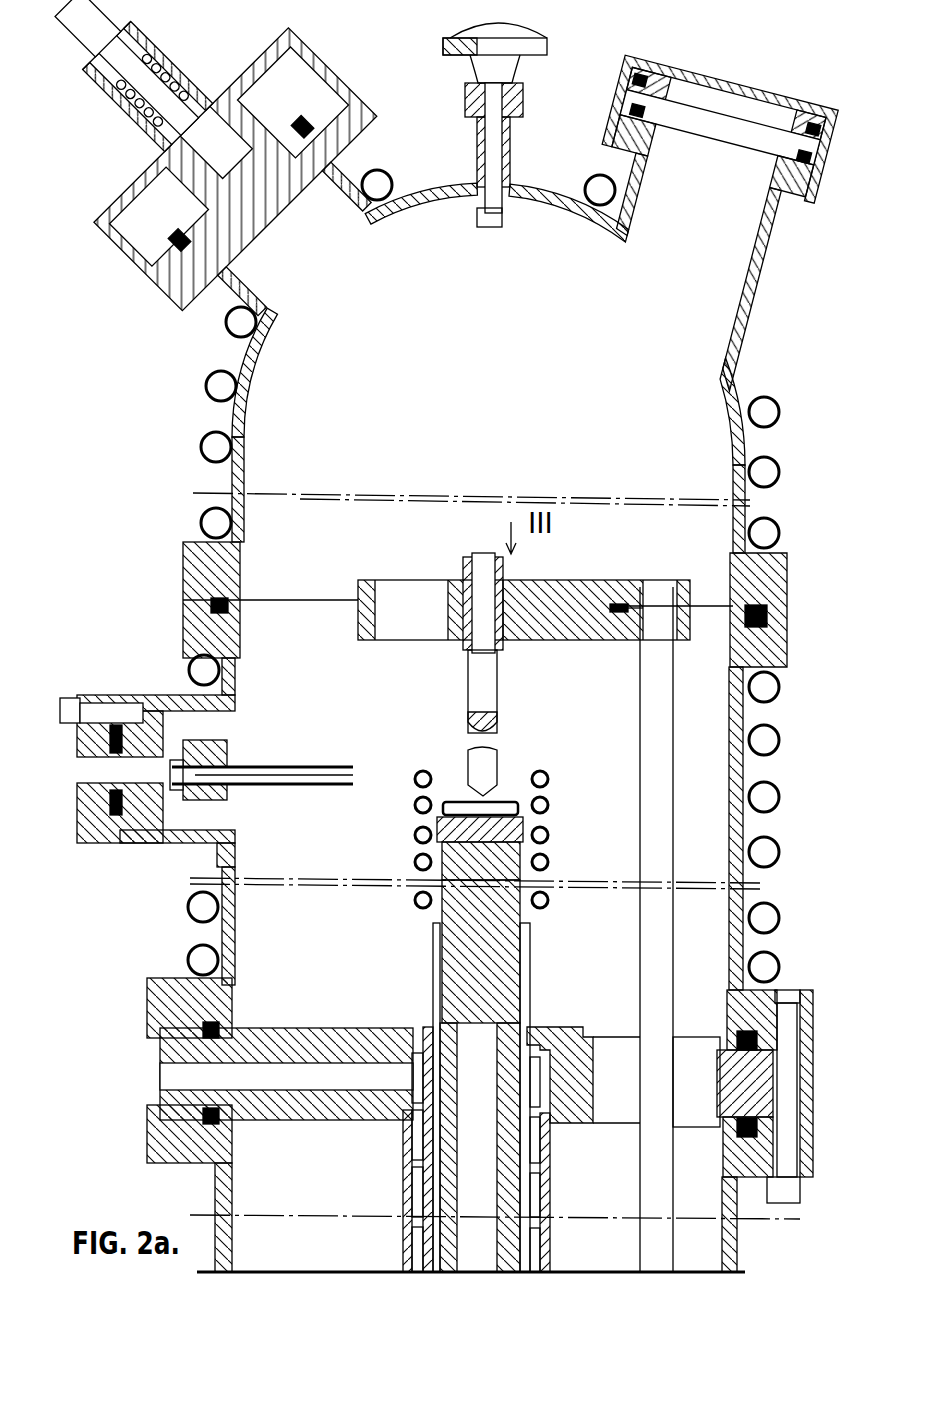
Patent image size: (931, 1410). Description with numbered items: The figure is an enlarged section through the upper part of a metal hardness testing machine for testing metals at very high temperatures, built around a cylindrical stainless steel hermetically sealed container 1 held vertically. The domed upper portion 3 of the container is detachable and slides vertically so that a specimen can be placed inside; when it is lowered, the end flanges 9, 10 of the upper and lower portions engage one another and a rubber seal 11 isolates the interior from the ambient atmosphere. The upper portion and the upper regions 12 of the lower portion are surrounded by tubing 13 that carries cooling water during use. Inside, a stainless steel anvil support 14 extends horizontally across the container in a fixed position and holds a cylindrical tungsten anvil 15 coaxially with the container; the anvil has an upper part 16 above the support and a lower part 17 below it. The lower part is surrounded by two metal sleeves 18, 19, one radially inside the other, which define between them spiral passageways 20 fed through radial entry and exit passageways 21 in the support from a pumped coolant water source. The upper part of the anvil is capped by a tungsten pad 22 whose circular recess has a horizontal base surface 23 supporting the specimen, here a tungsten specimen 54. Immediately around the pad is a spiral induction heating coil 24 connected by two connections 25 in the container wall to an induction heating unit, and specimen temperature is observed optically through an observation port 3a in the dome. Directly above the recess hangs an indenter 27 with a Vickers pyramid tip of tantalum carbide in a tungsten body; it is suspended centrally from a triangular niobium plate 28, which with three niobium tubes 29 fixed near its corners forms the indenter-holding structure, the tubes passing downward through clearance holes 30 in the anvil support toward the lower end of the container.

The hermetically sealed container 1 is at (737, 1217).
The domed upper portion 3 is at (563, 182).
The observation port 3a is at (688, 231).
The end flange 9 is at (773, 587).
The end flange 10 is at (773, 643).
The rubber seal 11 is at (767, 620).
The upper regions 12 is at (737, 830).
The tubing 13 is at (776, 477).
The anvil support 14 is at (558, 1035).
The anvil 15 is at (493, 912).
The upper part 16 is at (505, 857).
The lower part 17 is at (508, 1157).
The metal sleeve 18 is at (538, 1167).
The metal sleeve 19 is at (547, 1190).
The spiral passageways 20 is at (532, 1250).
The entry and exit passageways 21 is at (315, 1075).
The tungsten pad 22 is at (513, 822).
The horizontal base surface 23 is at (500, 803).
The spiral induction heating coil 24 is at (547, 862).
The connections 25 is at (233, 785).
The indenter 27 is at (487, 680).
The triangular niobium plate 28 is at (586, 593).
The niobium tubes 29 is at (662, 848).
The clearance holes 30 is at (688, 1045).
The tungsten specimen 54 is at (453, 803).